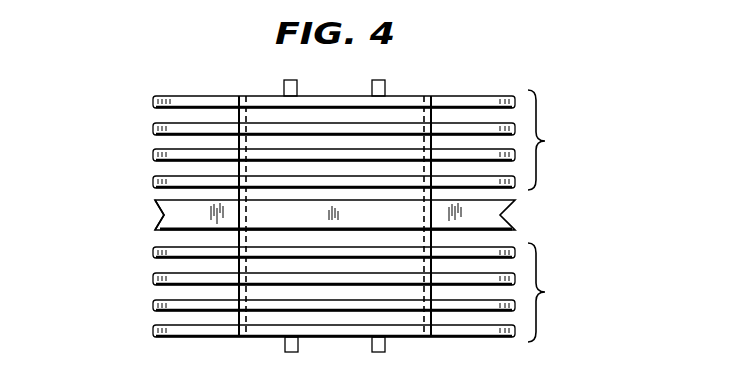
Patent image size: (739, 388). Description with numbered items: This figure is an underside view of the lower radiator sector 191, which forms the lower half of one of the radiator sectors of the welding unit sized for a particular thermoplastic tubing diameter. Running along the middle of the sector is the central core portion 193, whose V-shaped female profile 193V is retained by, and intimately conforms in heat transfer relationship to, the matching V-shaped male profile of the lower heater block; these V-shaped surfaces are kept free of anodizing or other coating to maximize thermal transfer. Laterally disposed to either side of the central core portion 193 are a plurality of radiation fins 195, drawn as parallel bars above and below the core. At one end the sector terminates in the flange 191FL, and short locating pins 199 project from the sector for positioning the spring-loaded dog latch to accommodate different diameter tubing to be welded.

The lower radiator sector 191 is at (112, 138).
The left-hand flange of lower radiator sector 191FL is at (514, 337).
The central core portion 193 is at (157, 231).
The V-shaped female profile 193V is at (150, 213).
The radiation fins 195 is at (563, 132).
The locating pins 199 is at (283, 82).